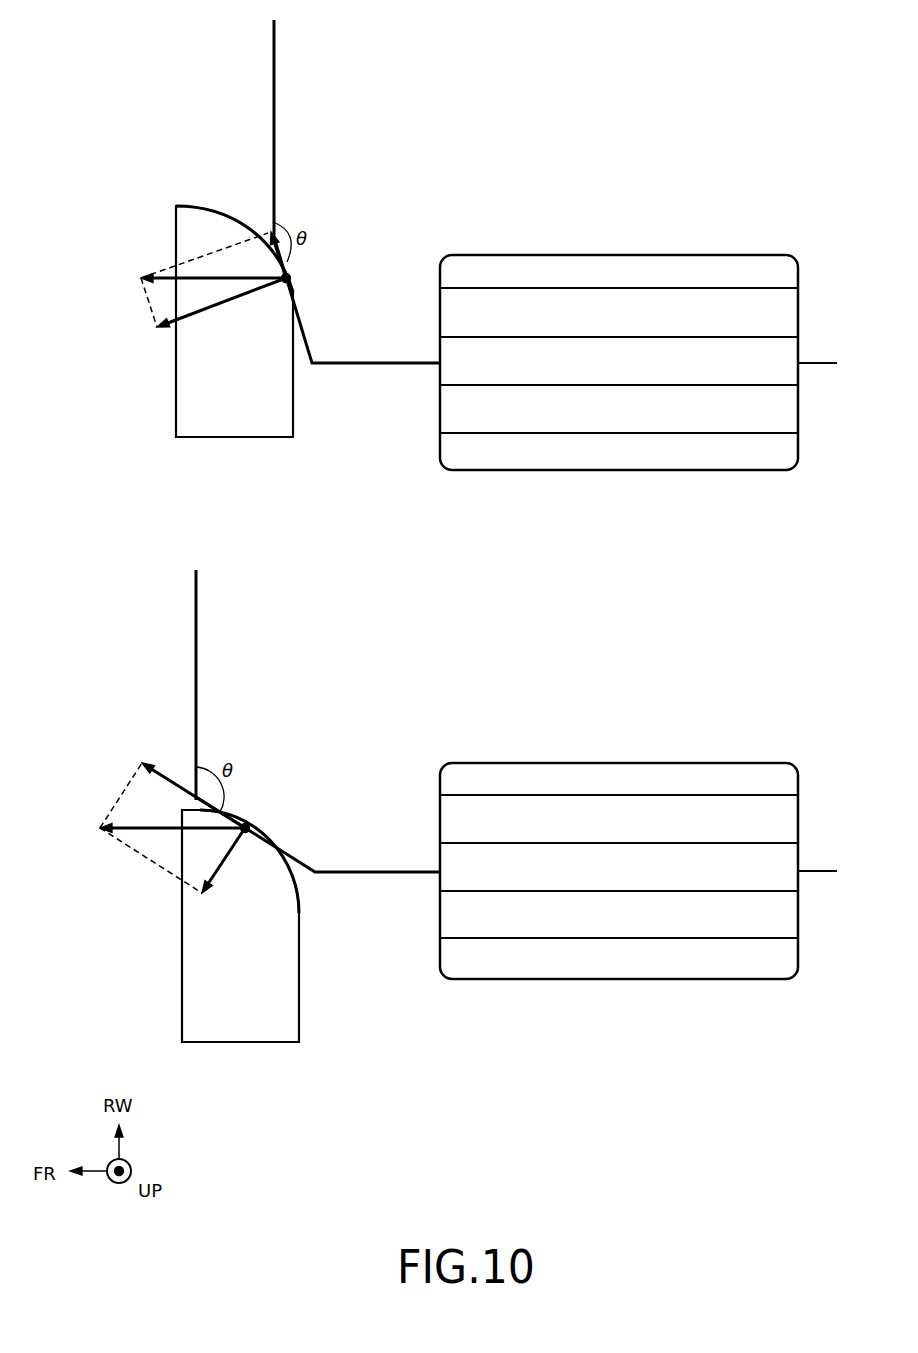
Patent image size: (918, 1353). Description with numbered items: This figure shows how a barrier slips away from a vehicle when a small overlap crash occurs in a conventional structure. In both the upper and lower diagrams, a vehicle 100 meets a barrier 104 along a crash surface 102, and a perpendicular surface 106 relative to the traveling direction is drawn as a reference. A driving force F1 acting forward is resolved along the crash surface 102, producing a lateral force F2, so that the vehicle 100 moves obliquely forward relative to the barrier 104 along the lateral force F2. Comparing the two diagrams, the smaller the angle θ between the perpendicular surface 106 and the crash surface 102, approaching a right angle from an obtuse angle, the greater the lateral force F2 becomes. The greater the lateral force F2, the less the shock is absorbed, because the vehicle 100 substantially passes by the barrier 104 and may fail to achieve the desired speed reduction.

The vehicle 100 is at (658, 505).
The crash surface 102 is at (312, 363).
The barrier 104 is at (202, 205).
The perpendicular surface 106 is at (273, 71).
The driving force F1 is at (193, 278).
The lateral force F2 is at (268, 233).